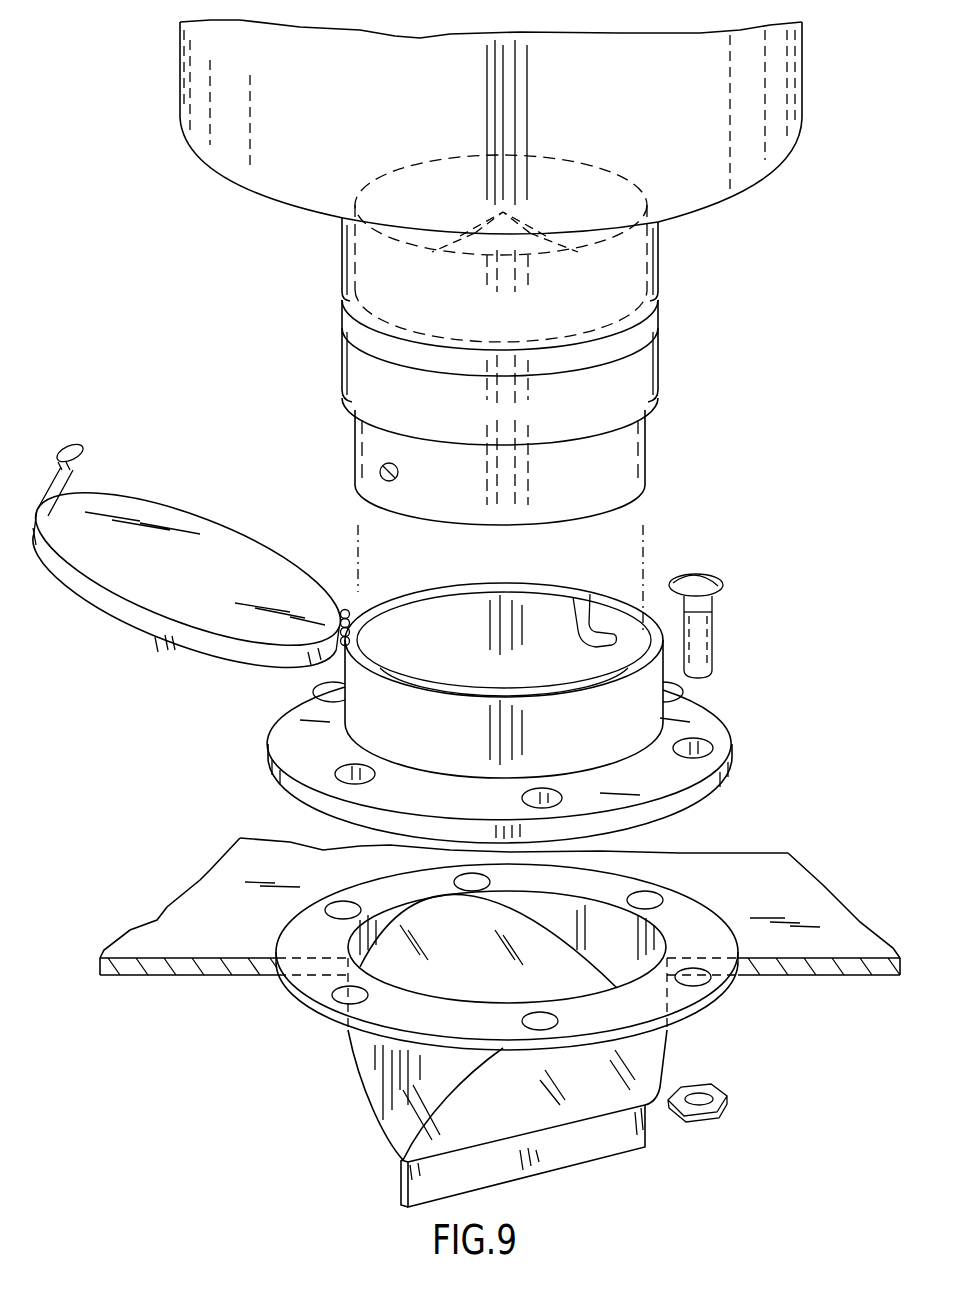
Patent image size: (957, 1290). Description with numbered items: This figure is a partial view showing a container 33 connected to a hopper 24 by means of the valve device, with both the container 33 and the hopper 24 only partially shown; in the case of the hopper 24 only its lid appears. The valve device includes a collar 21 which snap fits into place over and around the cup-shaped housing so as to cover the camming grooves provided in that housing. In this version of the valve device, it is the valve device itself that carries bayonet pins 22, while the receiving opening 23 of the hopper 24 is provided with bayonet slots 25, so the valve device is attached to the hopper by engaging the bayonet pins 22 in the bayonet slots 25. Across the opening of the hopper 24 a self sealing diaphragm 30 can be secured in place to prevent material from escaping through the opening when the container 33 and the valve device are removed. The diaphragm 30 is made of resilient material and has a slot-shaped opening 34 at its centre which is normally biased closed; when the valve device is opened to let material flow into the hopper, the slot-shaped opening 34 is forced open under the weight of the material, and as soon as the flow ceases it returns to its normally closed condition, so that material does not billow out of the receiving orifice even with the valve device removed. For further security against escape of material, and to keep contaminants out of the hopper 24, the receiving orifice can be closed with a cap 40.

The collar 21 is at (360, 372).
The bayonet pin 22 is at (380, 472).
The receiving opening 23 is at (520, 607).
The hopper 24 is at (215, 883).
The bayonet slot 25 is at (597, 603).
The self sealing diaphragm 30 is at (370, 1080).
The container 33 is at (225, 118).
The slot-shaped opening 34 is at (400, 1190).
The cap 40 is at (108, 592).